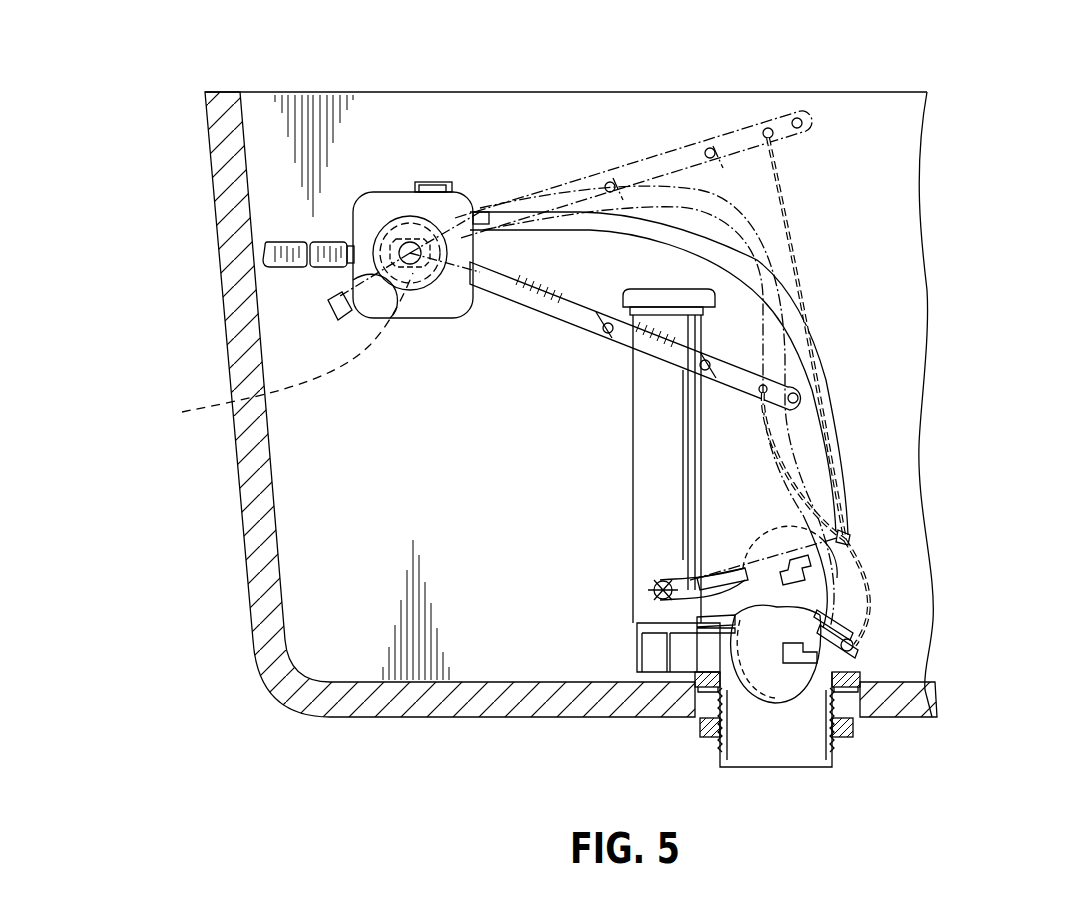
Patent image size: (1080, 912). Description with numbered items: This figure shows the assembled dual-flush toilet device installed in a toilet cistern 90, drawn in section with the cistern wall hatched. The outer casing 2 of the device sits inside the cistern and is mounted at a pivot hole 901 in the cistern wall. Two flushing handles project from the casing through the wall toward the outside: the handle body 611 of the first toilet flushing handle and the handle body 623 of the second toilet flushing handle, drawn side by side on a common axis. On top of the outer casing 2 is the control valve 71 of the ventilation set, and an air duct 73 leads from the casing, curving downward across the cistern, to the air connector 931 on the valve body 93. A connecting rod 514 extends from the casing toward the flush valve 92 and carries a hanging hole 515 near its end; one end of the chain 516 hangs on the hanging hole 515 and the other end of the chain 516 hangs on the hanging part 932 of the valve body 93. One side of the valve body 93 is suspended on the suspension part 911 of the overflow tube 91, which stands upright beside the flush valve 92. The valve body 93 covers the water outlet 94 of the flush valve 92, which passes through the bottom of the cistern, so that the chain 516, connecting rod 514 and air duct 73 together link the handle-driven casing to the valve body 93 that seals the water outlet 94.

The outer casing 2 is at (408, 175).
The control valve 71 is at (430, 182).
The air duct 73 is at (663, 227).
The handle body 623 is at (283, 258).
The handle body 611 is at (327, 258).
The tank mounting hole centerline 901 is at (273, 352).
The toilet cistern 90 is at (256, 459).
The overflow tube 91 is at (633, 455).
The connecting rod 514 is at (733, 370).
The hanging hole 515 is at (817, 367).
The chain 516 is at (868, 572).
The air connector 931 is at (840, 617).
The hanging part 932 is at (855, 648).
The suspension part 911 is at (670, 600).
The flush valve 92 is at (708, 700).
The valve body 93 is at (828, 690).
The water outlet 94 is at (793, 713).